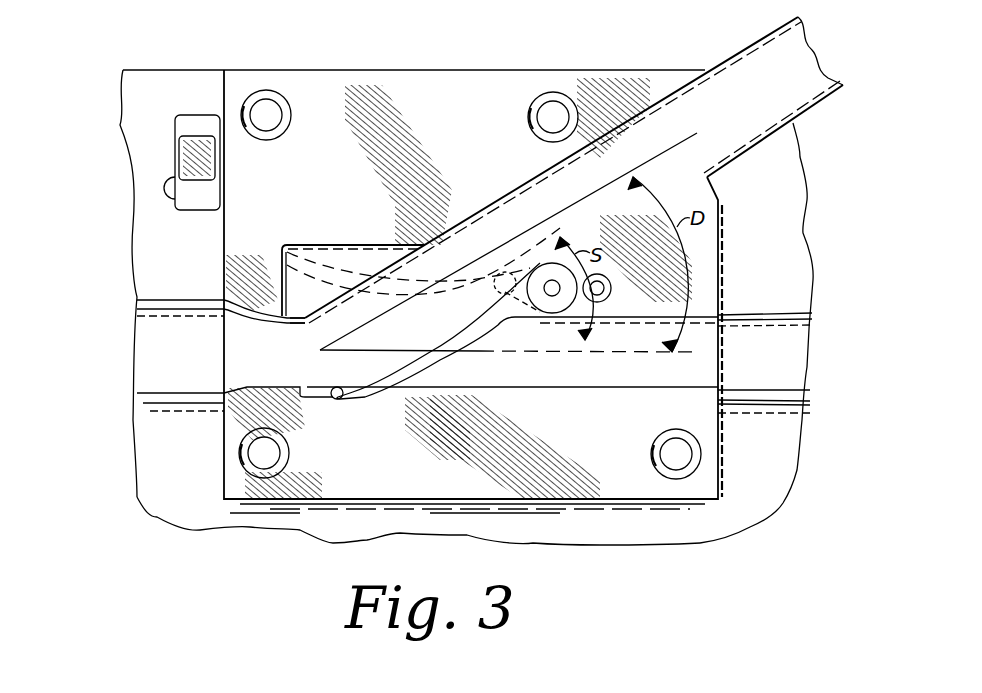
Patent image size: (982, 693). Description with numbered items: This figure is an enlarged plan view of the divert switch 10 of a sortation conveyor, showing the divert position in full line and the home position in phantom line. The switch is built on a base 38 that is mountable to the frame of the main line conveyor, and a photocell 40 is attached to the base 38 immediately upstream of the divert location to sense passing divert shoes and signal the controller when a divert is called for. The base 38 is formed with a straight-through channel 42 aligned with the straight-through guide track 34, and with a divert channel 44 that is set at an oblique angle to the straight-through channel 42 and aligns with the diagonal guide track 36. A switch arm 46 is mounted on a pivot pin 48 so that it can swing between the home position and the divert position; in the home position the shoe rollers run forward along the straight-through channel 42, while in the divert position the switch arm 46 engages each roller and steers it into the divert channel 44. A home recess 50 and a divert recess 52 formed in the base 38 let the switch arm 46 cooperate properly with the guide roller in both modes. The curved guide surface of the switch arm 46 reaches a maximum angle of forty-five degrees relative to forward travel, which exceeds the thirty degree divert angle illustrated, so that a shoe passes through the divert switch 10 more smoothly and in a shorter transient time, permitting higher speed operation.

The divert switch 10 is at (468, 150).
The straight-through guide track 34 is at (762, 367).
The diagonal guide track 36 is at (747, 100).
The base 38 is at (382, 473).
The photocell 40 is at (183, 125).
The straight-through channel 42 is at (700, 343).
The divert channel 44 is at (626, 155).
The switch arm 46 is at (370, 387).
The pivot pin 48 is at (552, 296).
The home recess 50 is at (353, 250).
The divert recess 52 is at (333, 400).